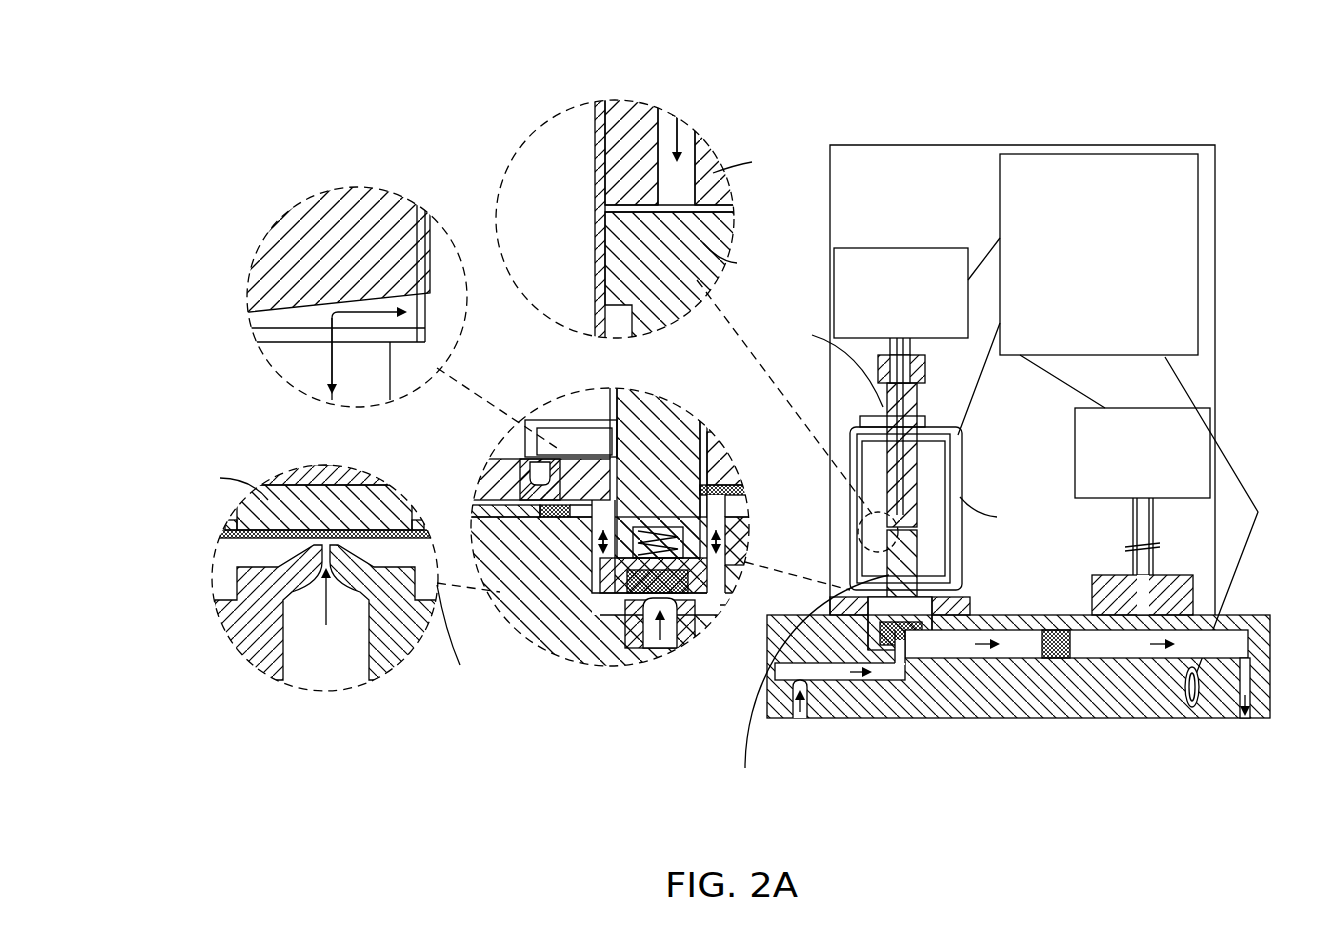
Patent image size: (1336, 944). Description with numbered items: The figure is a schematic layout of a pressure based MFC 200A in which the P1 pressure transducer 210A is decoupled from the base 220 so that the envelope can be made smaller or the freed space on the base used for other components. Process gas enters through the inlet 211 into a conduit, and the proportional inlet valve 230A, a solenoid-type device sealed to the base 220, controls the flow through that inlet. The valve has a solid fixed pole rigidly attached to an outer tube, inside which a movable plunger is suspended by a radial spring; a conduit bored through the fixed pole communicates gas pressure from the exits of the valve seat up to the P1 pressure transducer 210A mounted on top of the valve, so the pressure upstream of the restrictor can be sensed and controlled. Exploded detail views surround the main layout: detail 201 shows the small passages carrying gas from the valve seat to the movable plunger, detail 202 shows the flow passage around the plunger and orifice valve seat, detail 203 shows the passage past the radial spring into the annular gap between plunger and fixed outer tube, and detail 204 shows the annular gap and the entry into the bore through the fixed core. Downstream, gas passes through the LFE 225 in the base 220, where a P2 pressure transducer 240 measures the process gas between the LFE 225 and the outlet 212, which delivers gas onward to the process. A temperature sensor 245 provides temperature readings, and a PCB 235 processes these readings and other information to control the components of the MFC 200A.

The pressure based MFC 200A is at (1175, 90).
The detail 201 is at (532, 650).
The detail 202 is at (232, 645).
The detail 203 is at (357, 186).
The detail 204 is at (693, 137).
The P1 pressure transducer 210A is at (868, 247).
The inlet 211 is at (800, 725).
The outlet 212 is at (1238, 720).
The base 220 is at (1090, 690).
The LFE 225 is at (1038, 650).
The proportional inlet valve 230A is at (938, 495).
The PCB 235 is at (1200, 208).
The P2 pressure transducer 240 is at (1212, 472).
The temperature sensor 245 is at (1177, 692).